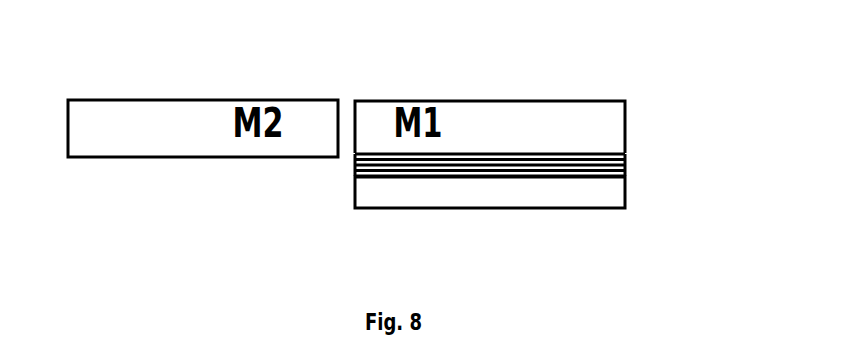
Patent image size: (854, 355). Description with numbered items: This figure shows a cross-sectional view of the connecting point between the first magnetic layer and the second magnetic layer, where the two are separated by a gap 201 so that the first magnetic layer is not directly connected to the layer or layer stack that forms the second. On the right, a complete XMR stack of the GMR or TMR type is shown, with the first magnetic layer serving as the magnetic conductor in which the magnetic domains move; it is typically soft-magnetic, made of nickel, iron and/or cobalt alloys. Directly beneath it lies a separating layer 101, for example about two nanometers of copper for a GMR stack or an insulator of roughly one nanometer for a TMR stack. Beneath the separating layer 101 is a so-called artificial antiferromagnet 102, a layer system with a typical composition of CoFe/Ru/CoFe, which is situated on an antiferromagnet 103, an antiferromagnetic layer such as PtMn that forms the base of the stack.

The gap 201 is at (348, 95).
The separating layer 101 is at (625, 156).
The artificial antiferromagnet 102 is at (625, 168).
The antiferromagnet 103 is at (600, 190).